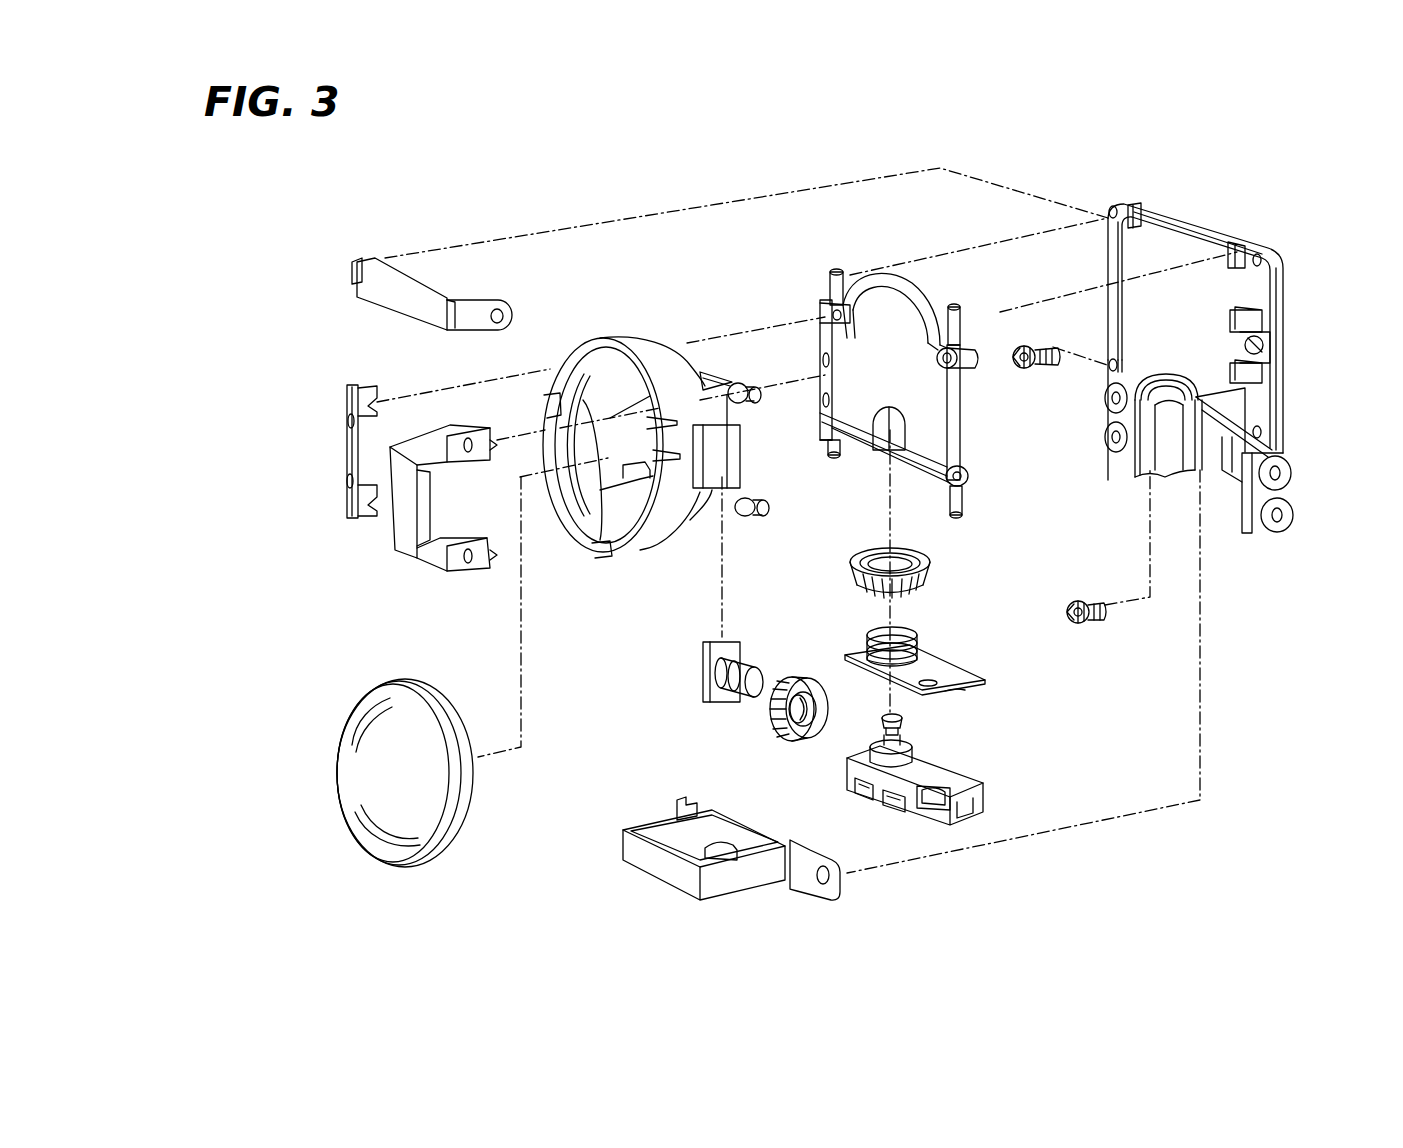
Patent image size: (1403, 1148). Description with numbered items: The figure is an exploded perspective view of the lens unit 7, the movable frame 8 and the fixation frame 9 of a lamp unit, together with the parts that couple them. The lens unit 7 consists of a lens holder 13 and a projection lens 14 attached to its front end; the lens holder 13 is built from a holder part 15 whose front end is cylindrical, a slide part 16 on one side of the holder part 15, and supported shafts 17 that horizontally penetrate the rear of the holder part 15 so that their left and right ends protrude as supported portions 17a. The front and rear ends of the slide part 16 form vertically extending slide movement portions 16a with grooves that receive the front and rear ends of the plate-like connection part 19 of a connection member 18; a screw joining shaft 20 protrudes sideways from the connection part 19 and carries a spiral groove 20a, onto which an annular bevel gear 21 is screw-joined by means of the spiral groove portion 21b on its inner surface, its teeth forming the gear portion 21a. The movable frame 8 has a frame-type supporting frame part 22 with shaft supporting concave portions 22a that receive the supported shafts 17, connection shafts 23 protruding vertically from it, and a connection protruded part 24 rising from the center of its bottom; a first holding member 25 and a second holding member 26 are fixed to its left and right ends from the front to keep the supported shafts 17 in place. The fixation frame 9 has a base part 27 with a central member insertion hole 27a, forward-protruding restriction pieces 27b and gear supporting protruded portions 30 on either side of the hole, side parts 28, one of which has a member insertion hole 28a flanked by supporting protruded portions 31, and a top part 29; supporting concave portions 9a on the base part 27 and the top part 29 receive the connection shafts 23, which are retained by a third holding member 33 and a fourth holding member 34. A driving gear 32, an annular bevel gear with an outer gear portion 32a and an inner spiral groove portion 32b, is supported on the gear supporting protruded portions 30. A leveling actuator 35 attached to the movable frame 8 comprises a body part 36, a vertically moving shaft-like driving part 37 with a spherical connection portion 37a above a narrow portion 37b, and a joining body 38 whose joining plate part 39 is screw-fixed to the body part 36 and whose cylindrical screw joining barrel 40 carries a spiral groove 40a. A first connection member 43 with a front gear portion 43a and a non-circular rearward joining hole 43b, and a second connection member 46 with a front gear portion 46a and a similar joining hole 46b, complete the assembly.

The lens unit 7 is at (590, 716).
The movable frame 8 is at (960, 425).
The fixation frame 9 is at (1167, 217).
The supporting concave portions 9a is at (1118, 200).
The lens holder 13 is at (640, 550).
The projection lens 14 is at (474, 778).
The holder part 15 is at (630, 343).
The slide part 16 is at (755, 457).
The slide movement portions 16a is at (760, 428).
The supported shafts 17 is at (752, 392).
The supported portions 17a is at (757, 392).
The connection member 18 is at (703, 640).
The connection part 19 is at (700, 663).
The screw joining shaft 20 is at (745, 702).
The spiral groove 20a is at (703, 687).
The gear 21 is at (808, 680).
The gear portion 21a is at (772, 710).
The spiral groove portion 21b is at (823, 710).
The supporting frame part 22 is at (912, 284).
The shaft supporting concave portions 22a is at (943, 357).
The connection shafts 23 is at (838, 268).
The connection protruded part 24 is at (893, 410).
The first holding member 25 is at (398, 550).
The second holding member 26 is at (360, 445).
The base part 27 is at (1106, 438).
The member insertion hole 27a is at (1106, 412).
The restriction pieces 27b is at (1135, 472).
The side parts 28 is at (1107, 265).
The member insertion hole 28a is at (1272, 332).
The top part 29 is at (1192, 222).
The gear supporting protruded portions 30 is at (1108, 400).
The supporting protruded portions 31 is at (1227, 370).
The driving gear 32 is at (927, 573).
The gear portion 32a is at (922, 586).
The spiral groove portion 32b is at (877, 552).
The third holding member 33 is at (427, 293).
The fourth holding member 34 is at (623, 847).
The leveling actuator 35 is at (1047, 700).
The body part 36 is at (937, 763).
The driving part 37 is at (903, 730).
The spherical connection portion 37a is at (902, 720).
The narrow portion 37b is at (870, 747).
The joining body 38 is at (955, 693).
The joining plate part 39 is at (970, 673).
The screw joining barrel 40 is at (867, 633).
The spiral groove 40a is at (920, 650).
The first connection member 43 is at (1087, 600).
The gear portion 43a is at (1065, 602).
The joining hole 43b is at (1100, 622).
The second connection member 46 is at (1024, 352).
The gear portion 46a is at (1018, 366).
The joining hole 46b is at (1050, 352).